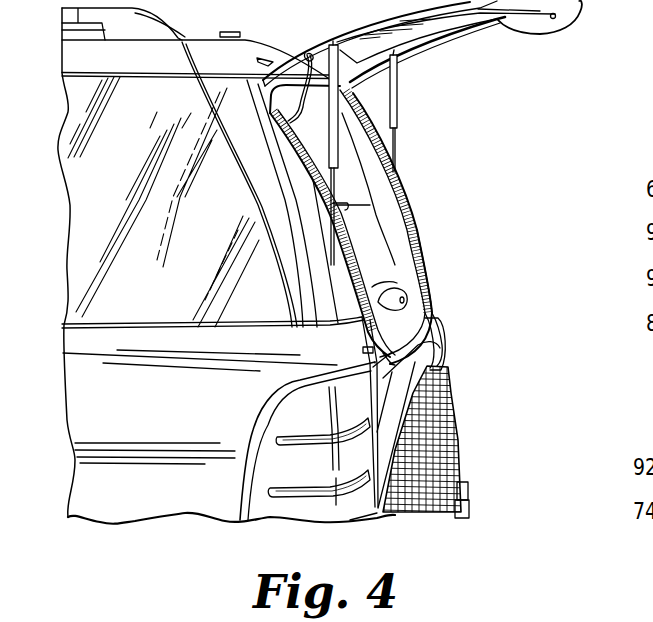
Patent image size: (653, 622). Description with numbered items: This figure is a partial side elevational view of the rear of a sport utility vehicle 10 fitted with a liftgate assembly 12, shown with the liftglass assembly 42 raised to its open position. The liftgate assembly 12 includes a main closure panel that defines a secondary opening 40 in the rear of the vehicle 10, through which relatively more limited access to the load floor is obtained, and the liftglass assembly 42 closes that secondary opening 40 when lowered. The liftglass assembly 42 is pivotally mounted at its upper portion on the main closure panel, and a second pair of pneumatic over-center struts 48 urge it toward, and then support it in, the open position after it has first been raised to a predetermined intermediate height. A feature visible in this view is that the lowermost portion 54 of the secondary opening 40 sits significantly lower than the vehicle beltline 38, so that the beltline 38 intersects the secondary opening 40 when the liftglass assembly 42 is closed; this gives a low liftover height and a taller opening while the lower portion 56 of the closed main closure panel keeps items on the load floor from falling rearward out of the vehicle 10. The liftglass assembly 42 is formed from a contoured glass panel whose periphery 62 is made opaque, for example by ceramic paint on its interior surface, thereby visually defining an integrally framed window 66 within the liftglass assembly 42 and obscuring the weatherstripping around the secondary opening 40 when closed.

The sport utility vehicle 10 is at (520, 270).
The liftgate assembly 12 is at (403, 197).
The vehicle beltline 38 is at (113, 323).
The secondary opening 40 is at (430, 235).
The liftglass assembly 42 is at (572, 31).
The second pair of pneumatic over-center struts 48 is at (397, 147).
The lowermost portion of the secondary opening 54 is at (410, 305).
The lower portion of the main closure panel 56 is at (408, 398).
The periphery of the glass panel 62 is at (422, 46).
The framed window 66 is at (410, 35).